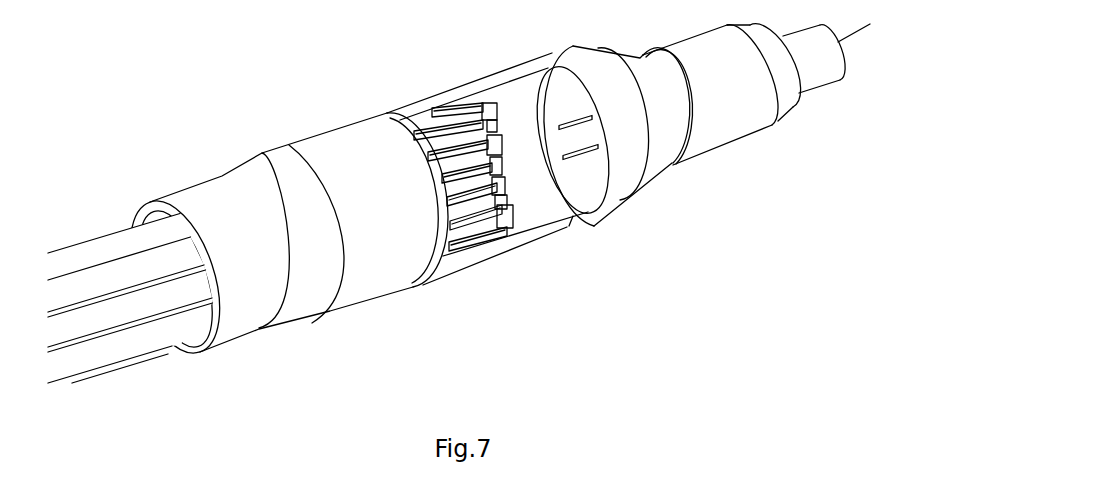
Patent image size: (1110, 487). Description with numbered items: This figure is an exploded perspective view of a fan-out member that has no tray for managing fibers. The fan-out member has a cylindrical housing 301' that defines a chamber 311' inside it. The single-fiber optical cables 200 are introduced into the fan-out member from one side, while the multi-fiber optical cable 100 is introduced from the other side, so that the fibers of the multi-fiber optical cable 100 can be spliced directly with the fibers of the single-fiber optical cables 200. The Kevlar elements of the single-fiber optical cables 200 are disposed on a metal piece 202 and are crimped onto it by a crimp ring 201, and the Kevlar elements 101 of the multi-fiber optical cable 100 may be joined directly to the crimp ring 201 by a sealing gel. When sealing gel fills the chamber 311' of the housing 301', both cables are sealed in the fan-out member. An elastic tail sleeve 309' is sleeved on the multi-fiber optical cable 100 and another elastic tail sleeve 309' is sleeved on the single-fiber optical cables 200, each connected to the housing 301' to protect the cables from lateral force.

The multi-fiber optical cable 100 is at (820, 82).
The Kevlar elements 101 is at (562, 122).
The single-fiber optical cables 200 is at (108, 243).
The crimp ring 201 is at (460, 107).
The metal piece 202 is at (498, 218).
The cylindrical housing 301' is at (598, 174).
The elastic tail sleeve 309' is at (457, 194).
The chamber 311' is at (487, 200).